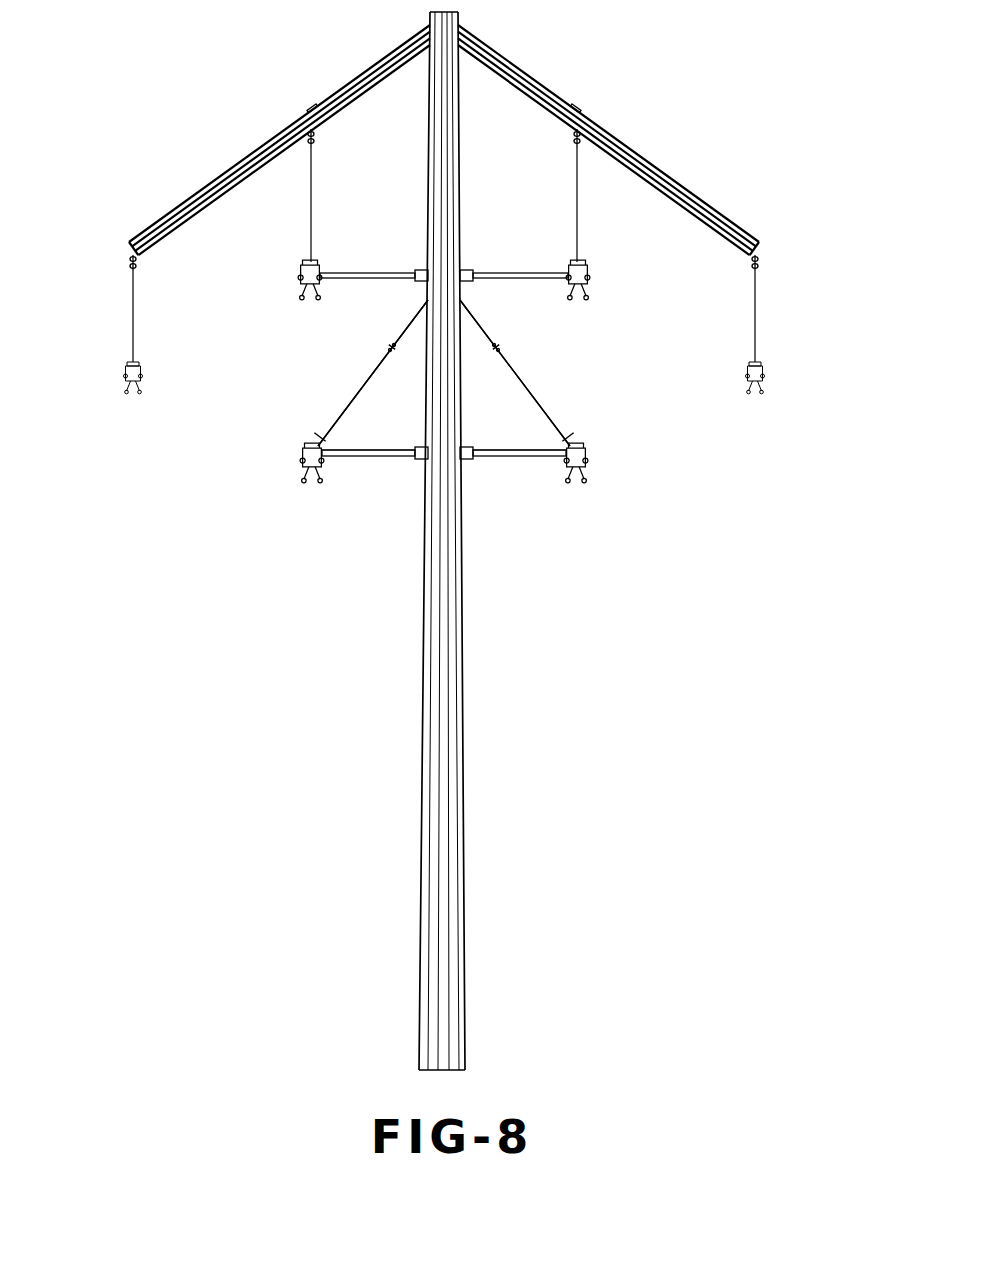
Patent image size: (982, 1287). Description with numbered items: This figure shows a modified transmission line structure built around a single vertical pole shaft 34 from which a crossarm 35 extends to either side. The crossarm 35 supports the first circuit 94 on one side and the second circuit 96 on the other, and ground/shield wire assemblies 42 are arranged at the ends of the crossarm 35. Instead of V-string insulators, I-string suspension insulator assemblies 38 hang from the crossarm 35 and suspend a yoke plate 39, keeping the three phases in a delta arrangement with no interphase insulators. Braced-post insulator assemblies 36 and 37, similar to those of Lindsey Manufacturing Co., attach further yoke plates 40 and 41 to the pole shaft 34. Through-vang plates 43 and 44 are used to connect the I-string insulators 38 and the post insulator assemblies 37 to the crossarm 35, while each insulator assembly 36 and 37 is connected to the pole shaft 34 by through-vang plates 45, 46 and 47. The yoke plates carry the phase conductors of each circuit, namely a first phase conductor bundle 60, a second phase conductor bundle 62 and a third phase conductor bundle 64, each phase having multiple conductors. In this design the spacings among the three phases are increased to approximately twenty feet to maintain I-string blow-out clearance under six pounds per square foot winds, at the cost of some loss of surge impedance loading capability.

The pole shaft 34 is at (443, 803).
The crossarm 35 is at (238, 165).
The braced-post insulator assembly 36 is at (366, 383).
The braced-post insulator assembly 37 is at (312, 163).
The I-string suspension insulator assembly 38 is at (128, 311).
The yoke plate 39 is at (443, 425).
The yoke plate 40 is at (439, 325).
The yoke plate 41 is at (442, 514).
The ground/shield wire assembly 42 is at (135, 237).
The through-vang plate 43 is at (142, 257).
The through-vang plate 44 is at (310, 133).
The through-vang plate 45 is at (418, 270).
The through-vang plate 46 is at (428, 303).
The through-vang plate 47 is at (423, 460).
The first phase conductor bundle 60 is at (308, 306).
The second phase conductor bundle 62 is at (130, 401).
The third phase conductor bundle 64 is at (312, 479).
The Circuit No. 1 94 is at (221, 598).
The Circuit No. 2 96 is at (667, 598).